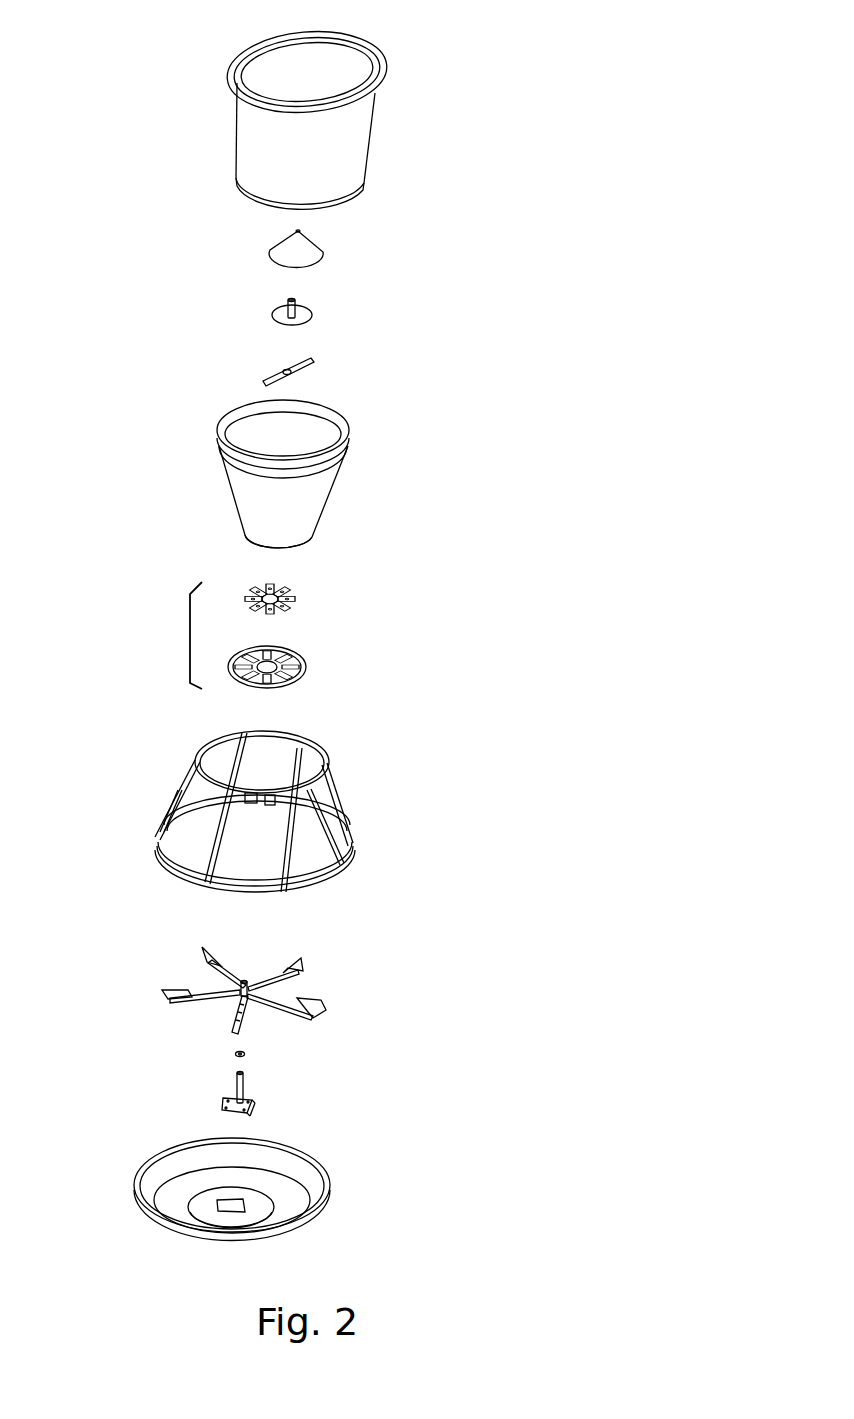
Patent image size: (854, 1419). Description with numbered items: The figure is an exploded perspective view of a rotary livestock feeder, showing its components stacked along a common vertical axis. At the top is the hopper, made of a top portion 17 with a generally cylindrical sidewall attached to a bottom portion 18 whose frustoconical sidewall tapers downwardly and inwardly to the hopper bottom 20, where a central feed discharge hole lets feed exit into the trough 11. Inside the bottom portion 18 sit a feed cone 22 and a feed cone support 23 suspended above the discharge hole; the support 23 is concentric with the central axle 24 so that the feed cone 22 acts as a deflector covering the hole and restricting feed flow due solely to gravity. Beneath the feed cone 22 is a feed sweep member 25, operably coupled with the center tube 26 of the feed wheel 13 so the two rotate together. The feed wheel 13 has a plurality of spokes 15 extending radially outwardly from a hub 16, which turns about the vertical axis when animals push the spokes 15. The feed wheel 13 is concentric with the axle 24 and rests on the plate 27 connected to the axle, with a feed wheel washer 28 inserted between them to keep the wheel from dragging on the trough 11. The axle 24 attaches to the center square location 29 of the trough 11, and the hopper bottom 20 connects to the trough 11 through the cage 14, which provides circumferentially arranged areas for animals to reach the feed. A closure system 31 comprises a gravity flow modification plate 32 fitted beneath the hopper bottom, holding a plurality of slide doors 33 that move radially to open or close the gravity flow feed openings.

The trough 11 is at (233, 1193).
The feed wheel 13 is at (278, 987).
The cage 14 is at (340, 802).
The spokes 15 is at (222, 970).
The hub 16 is at (248, 995).
The top portion 17 is at (360, 150).
The bottom portion 18 is at (327, 484).
The bottom 20 is at (245, 534).
The feed cone 22 is at (282, 245).
The feed cone support 23 is at (288, 304).
The central axle 24 is at (243, 1084).
The feed sweep member 25 is at (313, 360).
The center tube 26 is at (247, 980).
The plate 27 is at (222, 1101).
The feed wheel washer 28 is at (235, 1053).
The center square location 29 is at (220, 1208).
The closure system 31 is at (188, 631).
The gravity flow modification plate 32 is at (306, 665).
The slide doors 33 is at (300, 602).